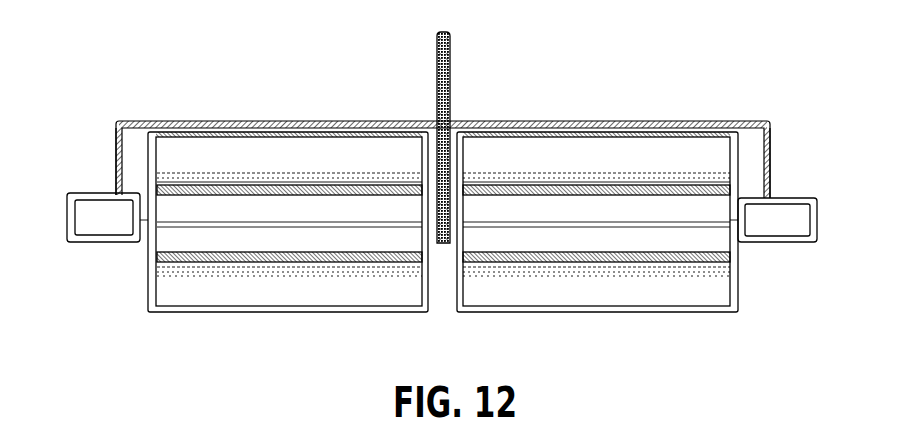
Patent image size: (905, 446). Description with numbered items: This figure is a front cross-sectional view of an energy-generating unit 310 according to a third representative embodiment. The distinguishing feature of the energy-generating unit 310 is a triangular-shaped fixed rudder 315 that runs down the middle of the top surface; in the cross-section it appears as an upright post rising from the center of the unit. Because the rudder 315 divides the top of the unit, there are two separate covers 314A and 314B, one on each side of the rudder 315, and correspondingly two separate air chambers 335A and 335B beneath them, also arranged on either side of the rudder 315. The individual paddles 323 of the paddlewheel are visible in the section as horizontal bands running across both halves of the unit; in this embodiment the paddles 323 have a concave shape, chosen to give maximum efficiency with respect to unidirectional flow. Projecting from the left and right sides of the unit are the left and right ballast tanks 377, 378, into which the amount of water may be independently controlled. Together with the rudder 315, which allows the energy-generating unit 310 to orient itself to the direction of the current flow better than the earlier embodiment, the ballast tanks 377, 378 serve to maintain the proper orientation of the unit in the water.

The energy-generating unit 310 is at (727, 78).
The cover 314A is at (412, 120).
The cover 314B is at (599, 120).
The fixed rudder 315 is at (447, 73).
The paddles 323 is at (328, 173).
The air chamber 335A is at (133, 158).
The air chamber 335B is at (750, 155).
The left ballast tank 377 is at (793, 227).
The right ballast tank 378 is at (117, 217).